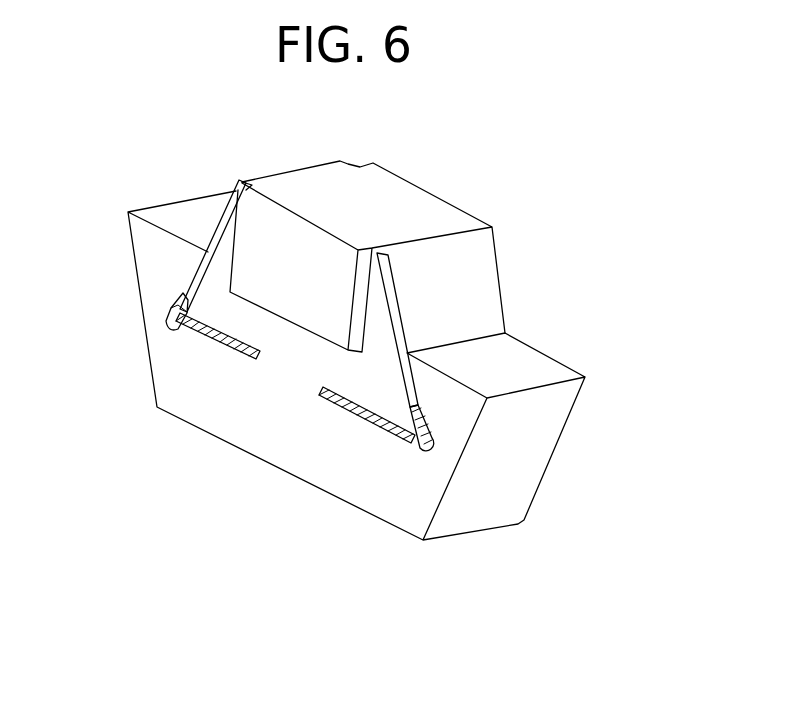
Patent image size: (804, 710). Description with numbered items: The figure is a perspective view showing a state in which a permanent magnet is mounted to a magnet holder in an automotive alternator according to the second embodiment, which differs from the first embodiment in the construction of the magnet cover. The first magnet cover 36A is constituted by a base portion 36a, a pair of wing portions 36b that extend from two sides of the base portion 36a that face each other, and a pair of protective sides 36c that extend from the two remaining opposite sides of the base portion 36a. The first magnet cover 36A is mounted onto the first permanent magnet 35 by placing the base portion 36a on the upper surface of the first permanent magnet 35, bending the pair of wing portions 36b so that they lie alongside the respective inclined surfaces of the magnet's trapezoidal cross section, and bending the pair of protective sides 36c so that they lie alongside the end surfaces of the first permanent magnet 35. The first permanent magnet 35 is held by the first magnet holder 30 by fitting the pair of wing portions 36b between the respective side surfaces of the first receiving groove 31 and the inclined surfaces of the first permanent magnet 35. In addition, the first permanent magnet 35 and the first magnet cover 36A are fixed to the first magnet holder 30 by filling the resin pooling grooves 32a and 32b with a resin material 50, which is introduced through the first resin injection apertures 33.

The first magnet holder 30 is at (578, 362).
The first receiving groove 31 is at (412, 388).
The resin pooling groove 32a is at (213, 343).
The resin pooling groove 32b is at (183, 298).
The first resin injection aperture 33 is at (170, 325).
The first permanent magnet 35 is at (300, 357).
The first magnet cover 36A is at (360, 230).
The base portion 36a is at (442, 215).
The wing portions 36b is at (480, 278).
The protective sides 36c is at (260, 245).
The resin material 50 is at (440, 445).